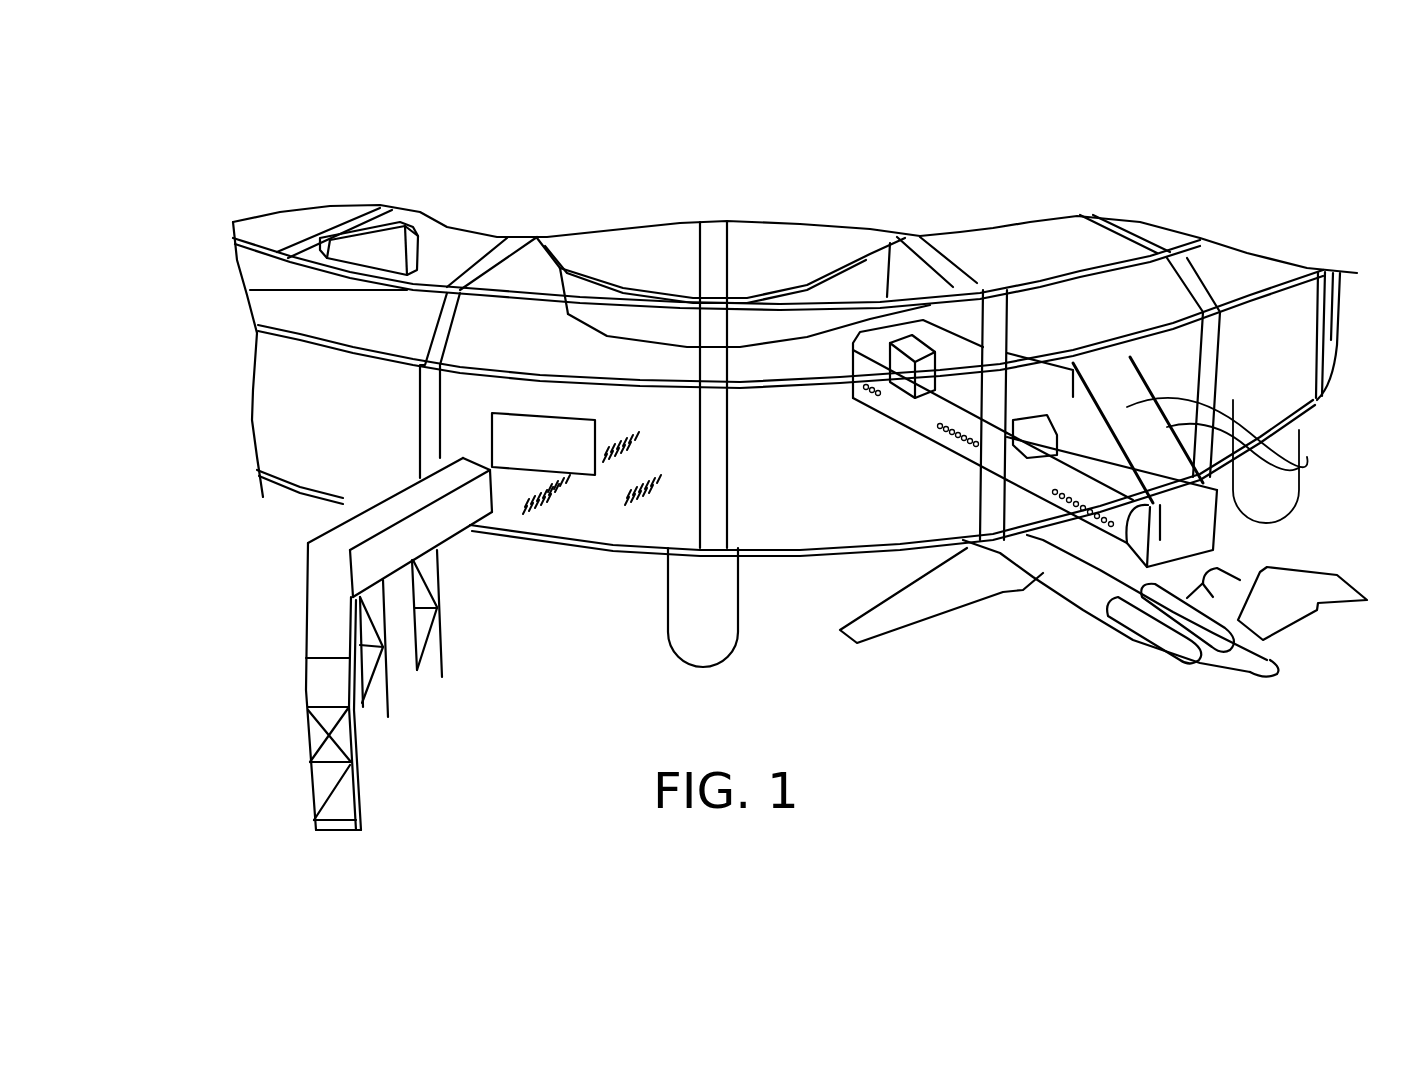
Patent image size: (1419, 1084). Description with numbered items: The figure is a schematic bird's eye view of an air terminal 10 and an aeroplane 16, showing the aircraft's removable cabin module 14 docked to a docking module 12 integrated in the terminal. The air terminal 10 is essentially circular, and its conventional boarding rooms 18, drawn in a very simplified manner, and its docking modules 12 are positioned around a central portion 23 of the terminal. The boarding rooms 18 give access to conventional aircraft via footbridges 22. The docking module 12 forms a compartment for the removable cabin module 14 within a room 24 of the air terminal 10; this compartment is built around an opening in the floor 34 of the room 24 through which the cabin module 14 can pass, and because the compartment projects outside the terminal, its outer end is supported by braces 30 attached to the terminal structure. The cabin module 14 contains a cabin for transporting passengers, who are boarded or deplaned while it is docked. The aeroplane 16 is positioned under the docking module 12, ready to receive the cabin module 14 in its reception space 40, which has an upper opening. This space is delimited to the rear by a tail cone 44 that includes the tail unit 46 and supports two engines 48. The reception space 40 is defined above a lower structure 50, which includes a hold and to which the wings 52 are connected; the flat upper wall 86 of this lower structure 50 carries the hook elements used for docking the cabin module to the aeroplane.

The air terminal 10 is at (297, 503).
The docking module 12 is at (427, 250).
The removable cabin module 14 is at (945, 450).
The aeroplane 16 is at (1125, 646).
The conventional boarding room 18 is at (553, 408).
The footbridge 22 is at (310, 620).
The central portion 23 is at (895, 280).
The room 24 is at (826, 504).
The brace 30 is at (1300, 467).
The floor 34 is at (278, 408).
The reception space 40 is at (1070, 587).
The tail cone 44 is at (1253, 672).
The tail unit 46 is at (1280, 620).
The engine 48 is at (1165, 645).
The lower structure 50 is at (1023, 592).
The wing 52 is at (950, 587).
The flat upper wall 86 is at (1032, 571).